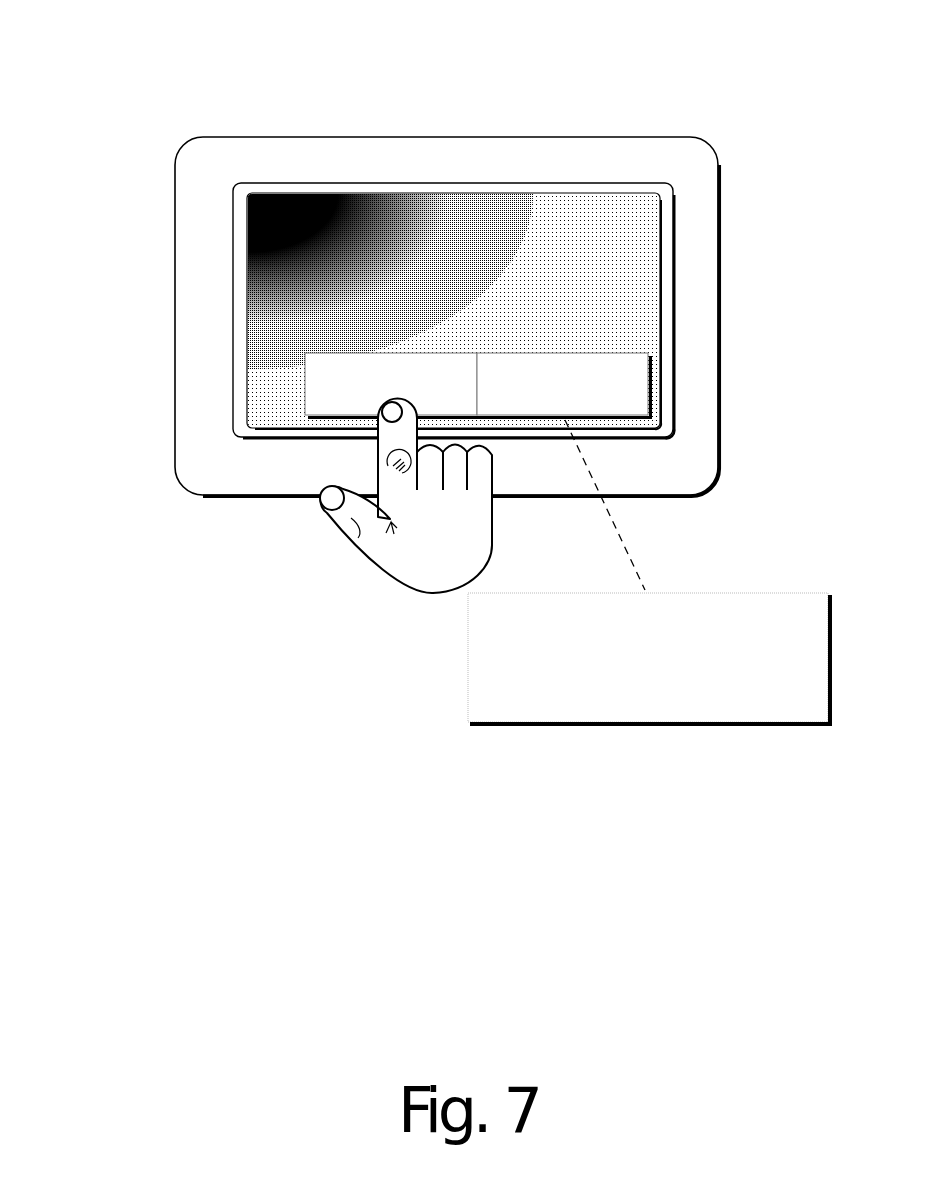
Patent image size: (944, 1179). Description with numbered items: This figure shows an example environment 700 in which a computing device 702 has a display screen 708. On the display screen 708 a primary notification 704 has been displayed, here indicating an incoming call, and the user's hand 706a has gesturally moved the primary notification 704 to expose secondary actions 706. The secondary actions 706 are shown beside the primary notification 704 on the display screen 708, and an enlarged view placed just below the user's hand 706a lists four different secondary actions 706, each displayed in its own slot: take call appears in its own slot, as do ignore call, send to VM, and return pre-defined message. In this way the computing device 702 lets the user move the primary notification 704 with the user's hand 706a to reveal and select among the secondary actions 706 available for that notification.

The environment 700 is at (175, 103).
The computing device 702 is at (365, 137).
The primary notification 704 is at (392, 353).
The secondary actions 706 is at (564, 353).
The user's hand 706a is at (457, 542).
The display screen 708 is at (642, 218).